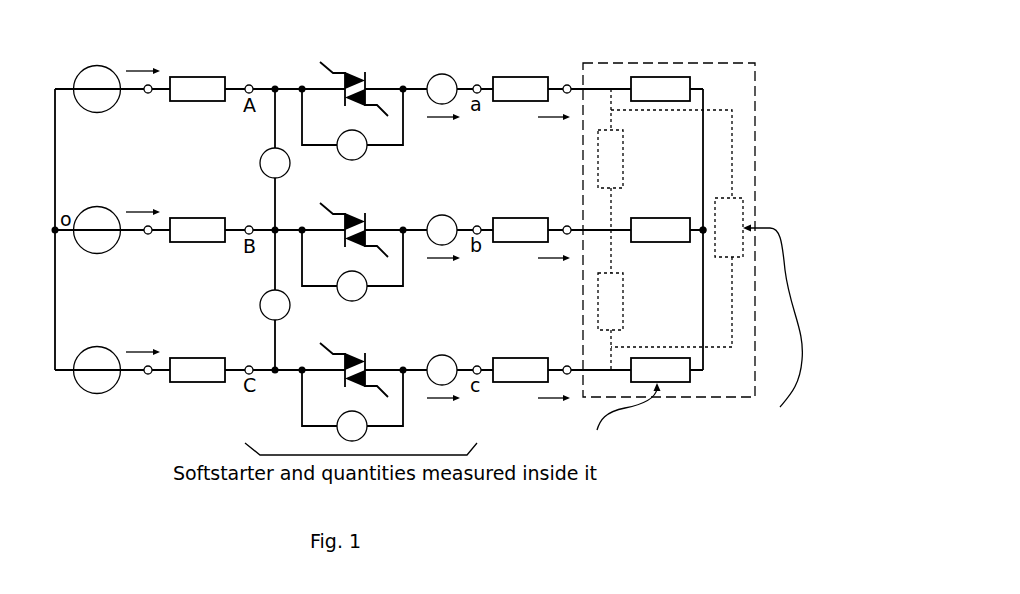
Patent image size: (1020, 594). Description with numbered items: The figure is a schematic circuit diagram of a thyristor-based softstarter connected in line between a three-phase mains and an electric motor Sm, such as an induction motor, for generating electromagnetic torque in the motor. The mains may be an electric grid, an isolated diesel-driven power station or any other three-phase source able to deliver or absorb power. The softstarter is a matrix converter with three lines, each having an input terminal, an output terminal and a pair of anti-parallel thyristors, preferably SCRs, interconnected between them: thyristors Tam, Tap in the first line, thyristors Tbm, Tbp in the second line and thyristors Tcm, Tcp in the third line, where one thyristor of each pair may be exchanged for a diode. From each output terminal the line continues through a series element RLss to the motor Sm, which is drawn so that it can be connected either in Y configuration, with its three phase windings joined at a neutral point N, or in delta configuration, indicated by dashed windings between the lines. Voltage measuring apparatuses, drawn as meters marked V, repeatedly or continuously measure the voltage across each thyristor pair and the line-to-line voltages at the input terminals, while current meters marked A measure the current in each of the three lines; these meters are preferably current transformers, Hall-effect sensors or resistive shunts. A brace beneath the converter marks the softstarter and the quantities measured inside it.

The electric motor Sm is at (694, 247).
The neutral point N is at (697, 214).
The softstarter line impedance RLss is at (520, 218).
The thyristor Tam is at (358, 76).
The thyristor Tap is at (347, 96).
The thyristor Tbm is at (359, 217).
The thyristor Tbp is at (347, 237).
The thyristor Tcm is at (357, 357).
The thyristor Tcp is at (347, 377).